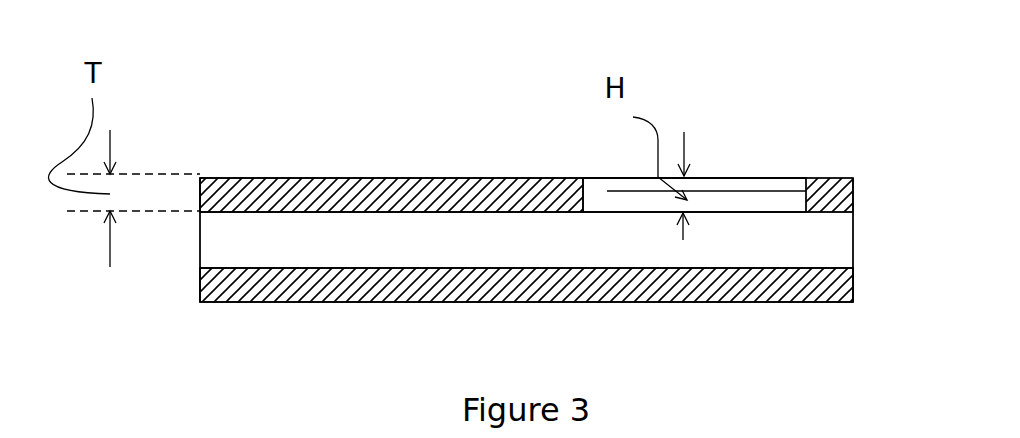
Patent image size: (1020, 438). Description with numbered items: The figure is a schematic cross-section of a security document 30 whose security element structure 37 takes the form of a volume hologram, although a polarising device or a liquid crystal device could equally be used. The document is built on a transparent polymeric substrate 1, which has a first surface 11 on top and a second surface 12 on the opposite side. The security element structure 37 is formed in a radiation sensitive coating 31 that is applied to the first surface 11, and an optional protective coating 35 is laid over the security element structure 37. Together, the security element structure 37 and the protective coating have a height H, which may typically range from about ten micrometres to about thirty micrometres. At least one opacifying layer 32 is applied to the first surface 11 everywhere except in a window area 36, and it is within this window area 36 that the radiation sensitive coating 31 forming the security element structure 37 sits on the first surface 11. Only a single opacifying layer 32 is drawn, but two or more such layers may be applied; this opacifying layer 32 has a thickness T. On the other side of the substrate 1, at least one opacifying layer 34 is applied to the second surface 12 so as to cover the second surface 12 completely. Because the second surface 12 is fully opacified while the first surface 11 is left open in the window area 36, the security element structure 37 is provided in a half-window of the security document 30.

The transparent polymeric substrate 1 is at (200, 240).
The first surface 11 is at (323, 210).
The second surface 12 is at (303, 270).
The security document 30 is at (265, 123).
The radiation sensitive coating 31 is at (786, 201).
The opacifying layer 32 is at (488, 190).
The opacifying layer 34 is at (852, 288).
The protective coating 35 is at (617, 177).
The window area 36 is at (728, 130).
The security element structure 37 is at (787, 188).